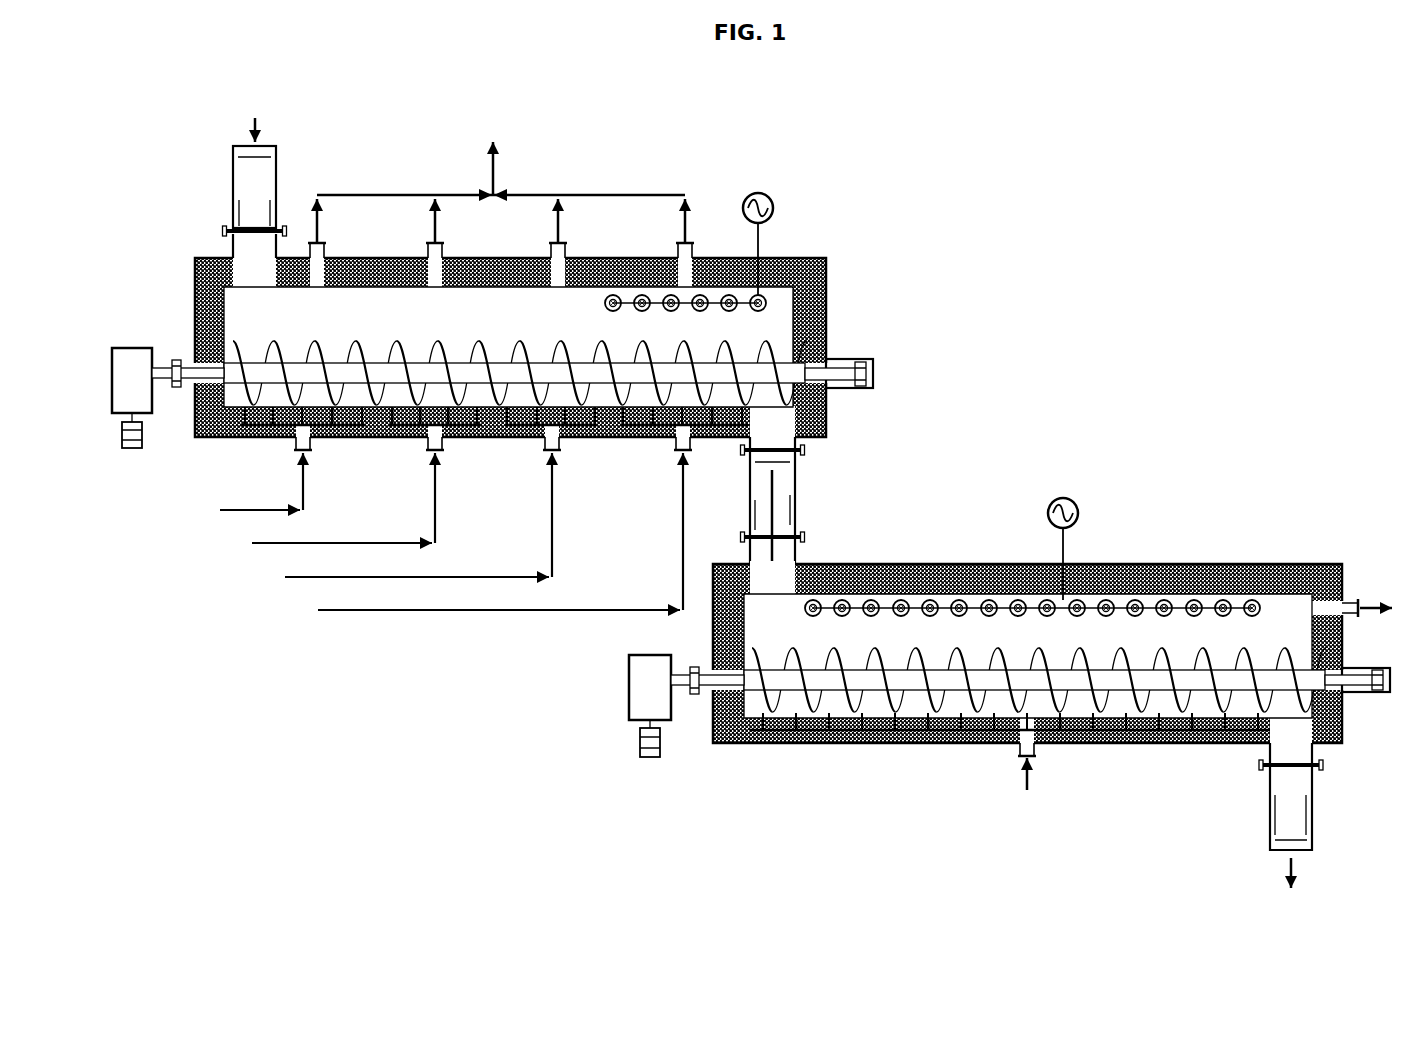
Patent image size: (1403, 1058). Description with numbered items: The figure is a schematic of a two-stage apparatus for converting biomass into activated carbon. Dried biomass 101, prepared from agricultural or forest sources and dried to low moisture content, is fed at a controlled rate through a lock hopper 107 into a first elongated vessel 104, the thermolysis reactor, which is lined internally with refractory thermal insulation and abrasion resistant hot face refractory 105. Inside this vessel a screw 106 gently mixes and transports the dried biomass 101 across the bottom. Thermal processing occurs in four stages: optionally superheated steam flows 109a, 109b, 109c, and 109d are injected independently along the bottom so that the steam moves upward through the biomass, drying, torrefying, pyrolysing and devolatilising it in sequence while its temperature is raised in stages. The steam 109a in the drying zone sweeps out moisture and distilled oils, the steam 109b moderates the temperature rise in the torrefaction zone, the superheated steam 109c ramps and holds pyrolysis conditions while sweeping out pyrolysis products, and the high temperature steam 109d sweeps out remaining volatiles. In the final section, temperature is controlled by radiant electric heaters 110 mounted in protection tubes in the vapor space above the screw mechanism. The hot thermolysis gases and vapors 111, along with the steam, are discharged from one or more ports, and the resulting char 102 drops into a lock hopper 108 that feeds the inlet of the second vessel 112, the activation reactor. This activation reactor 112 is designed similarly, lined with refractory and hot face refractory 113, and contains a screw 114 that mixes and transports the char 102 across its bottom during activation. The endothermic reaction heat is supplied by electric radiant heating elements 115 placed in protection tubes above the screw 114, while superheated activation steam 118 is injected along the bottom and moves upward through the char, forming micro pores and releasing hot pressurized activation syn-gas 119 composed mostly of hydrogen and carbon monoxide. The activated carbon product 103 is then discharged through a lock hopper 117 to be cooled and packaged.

The dried biomass 101 is at (255, 116).
The char 102 is at (776, 560).
The activated carbon product 103 is at (1297, 897).
The first elongated vessel (thermolysis reactor) 104 is at (196, 278).
The hot face refractory 105 is at (813, 340).
The screw 106 is at (332, 357).
The lock hopper 107 is at (277, 187).
The lock hopper 108 is at (800, 478).
The superheated steam flow (drying zone) 109a is at (280, 508).
The steam flow (torrefaction zone) 109b is at (430, 540).
The superheated steam flow (pyrolysis zone) 109c is at (549, 575).
The superheated steam flow (devolatilization zone) 109d is at (680, 608).
The radiant electric heaters 110 is at (762, 297).
The hot thermolysis gases and vapors 111 is at (501, 174).
The second vessel (activation reactor) 112 is at (1180, 562).
The hot face refractory 113 is at (725, 645).
The screw 114 is at (790, 695).
The electric radiant heating elements 115 is at (1020, 598).
The lock hopper 117 is at (1270, 820).
The superheated activation steam 118 is at (1027, 802).
The activation syn-gas 119 is at (1372, 598).